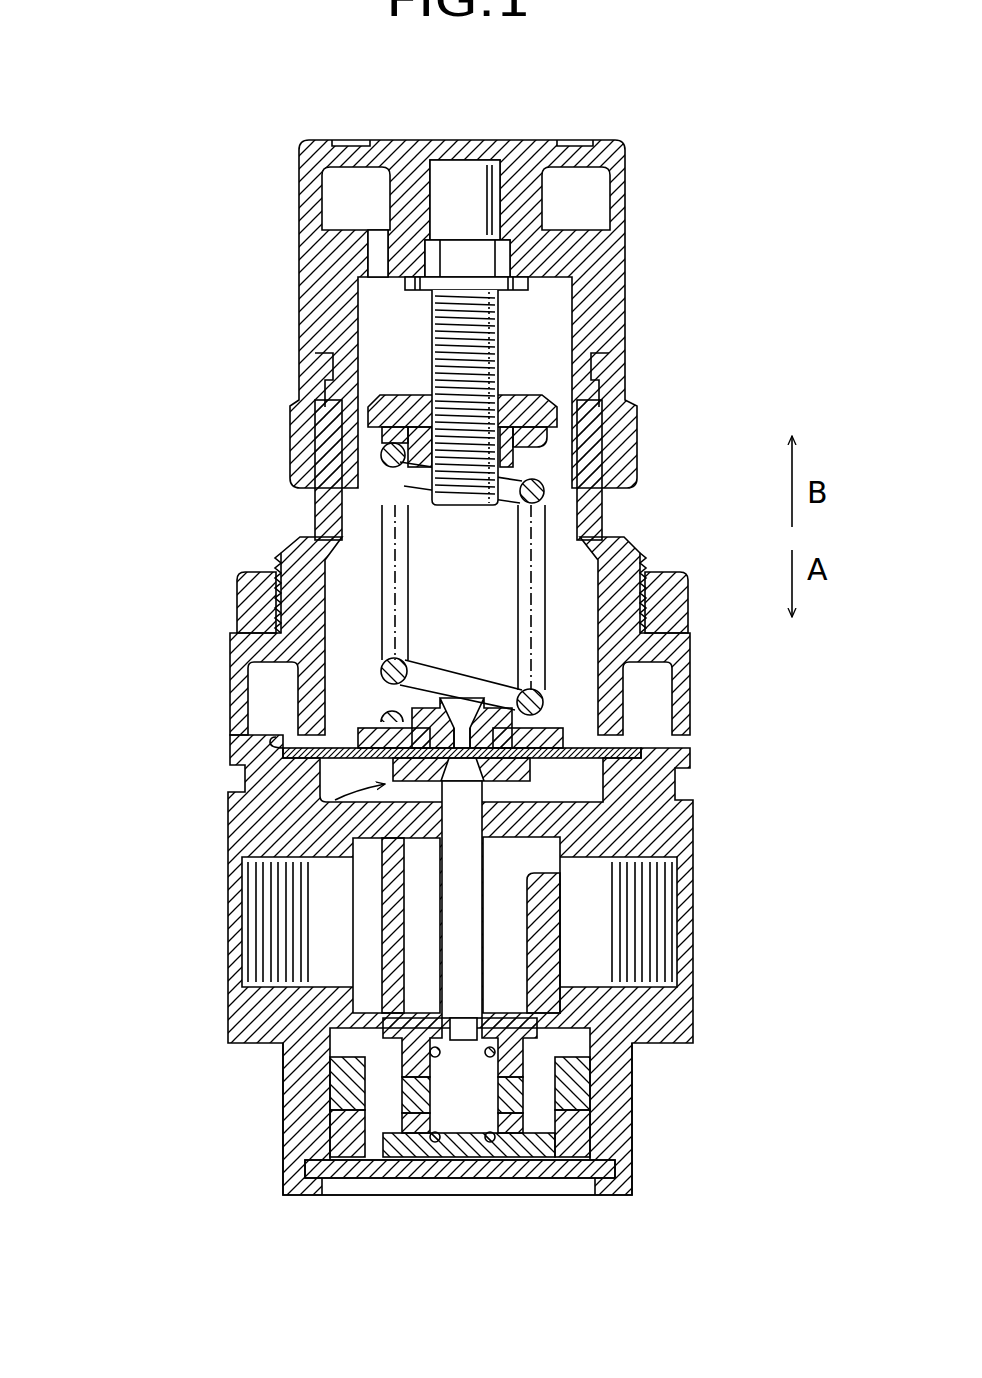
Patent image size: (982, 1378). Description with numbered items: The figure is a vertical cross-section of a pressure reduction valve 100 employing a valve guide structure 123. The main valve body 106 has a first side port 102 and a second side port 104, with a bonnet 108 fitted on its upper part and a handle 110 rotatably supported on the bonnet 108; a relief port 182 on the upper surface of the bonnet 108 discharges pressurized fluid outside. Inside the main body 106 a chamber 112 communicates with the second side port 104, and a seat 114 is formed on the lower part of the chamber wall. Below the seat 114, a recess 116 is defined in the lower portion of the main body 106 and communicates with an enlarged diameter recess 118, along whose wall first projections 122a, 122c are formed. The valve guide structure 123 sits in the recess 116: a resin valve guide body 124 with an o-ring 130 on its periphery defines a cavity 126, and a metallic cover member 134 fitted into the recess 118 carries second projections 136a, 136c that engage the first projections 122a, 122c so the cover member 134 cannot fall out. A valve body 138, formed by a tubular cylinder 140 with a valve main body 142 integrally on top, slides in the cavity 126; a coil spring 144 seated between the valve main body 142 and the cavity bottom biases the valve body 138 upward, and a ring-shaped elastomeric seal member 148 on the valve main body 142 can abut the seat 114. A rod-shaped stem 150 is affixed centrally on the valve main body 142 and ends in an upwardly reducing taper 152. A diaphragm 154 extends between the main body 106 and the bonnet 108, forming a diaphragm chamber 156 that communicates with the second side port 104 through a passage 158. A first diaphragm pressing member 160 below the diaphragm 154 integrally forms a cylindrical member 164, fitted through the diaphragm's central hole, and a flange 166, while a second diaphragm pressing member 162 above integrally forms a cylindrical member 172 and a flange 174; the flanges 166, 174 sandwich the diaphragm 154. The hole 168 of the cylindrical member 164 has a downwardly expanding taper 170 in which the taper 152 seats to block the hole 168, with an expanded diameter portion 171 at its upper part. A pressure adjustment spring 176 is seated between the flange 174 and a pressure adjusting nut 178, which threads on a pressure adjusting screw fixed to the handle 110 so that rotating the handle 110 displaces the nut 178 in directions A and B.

The pressure reduction valve 100 is at (672, 145).
The first side port 102 is at (238, 872).
The second side port 104 is at (605, 880).
The main valve body 106 is at (695, 757).
The bonnet 108 is at (638, 550).
The handle 110 is at (527, 132).
The chamber 112 is at (515, 955).
The seat 114 is at (390, 1000).
The recess 116 is at (600, 1118).
The enlarged diameter recess 118 is at (623, 1163).
The first projection 122a is at (307, 1190).
The first projection 122c is at (610, 1193).
The valve guide structure 123 is at (116, 1105).
The valve guide body 124 is at (320, 1120).
The cavity 126 is at (400, 1177).
The o-ring 130 is at (330, 1090).
The cover member 134 is at (300, 1172).
The second projection 136a is at (348, 1168).
The second projection 136c is at (600, 1172).
The valve body 138 is at (377, 1022).
The cylinder 140 is at (428, 1160).
The valve main body 142 is at (433, 960).
The coil spring 144 is at (503, 1157).
The seal member 148 is at (590, 1040).
The stem 150 is at (465, 925).
The taper 152 is at (650, 810).
The diaphragm 154 is at (232, 700).
The diaphragm chamber 156 is at (247, 783).
The passage 158 is at (575, 840).
The first diaphragm pressing member 160 is at (398, 786).
The second diaphragm pressing member 162 is at (346, 712).
The cylindrical member 164 is at (533, 698).
The flange 166 is at (430, 800).
The hole 168 is at (642, 615).
The taper 170 is at (675, 783).
The expanded diameter portion 171 is at (466, 735).
The cylindrical member 172 is at (280, 553).
The flange 174 is at (240, 590).
The pressure adjustment spring 176 is at (313, 537).
The pressure adjusting nut 178 is at (395, 395).
The relief port 182 is at (380, 243).